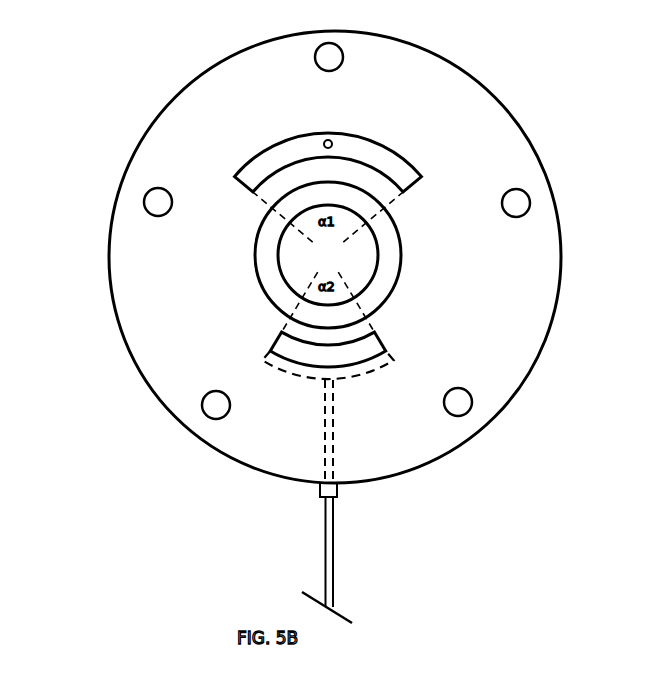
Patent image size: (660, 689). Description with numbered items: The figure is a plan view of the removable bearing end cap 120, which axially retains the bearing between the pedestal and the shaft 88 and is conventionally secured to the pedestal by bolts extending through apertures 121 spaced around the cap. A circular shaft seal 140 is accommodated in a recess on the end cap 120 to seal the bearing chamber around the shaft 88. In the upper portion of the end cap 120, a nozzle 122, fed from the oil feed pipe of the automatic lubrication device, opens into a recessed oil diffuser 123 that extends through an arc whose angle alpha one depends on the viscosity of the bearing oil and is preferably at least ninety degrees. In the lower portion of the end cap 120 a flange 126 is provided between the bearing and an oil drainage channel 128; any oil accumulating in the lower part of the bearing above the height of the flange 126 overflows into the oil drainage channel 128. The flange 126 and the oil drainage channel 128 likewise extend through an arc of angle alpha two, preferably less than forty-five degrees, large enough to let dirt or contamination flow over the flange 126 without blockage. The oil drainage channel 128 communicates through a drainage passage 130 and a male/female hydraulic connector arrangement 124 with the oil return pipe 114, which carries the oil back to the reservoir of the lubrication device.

The bearing end cap 120 is at (518, 118).
The apertures 121 is at (519, 202).
The nozzle 122 is at (323, 144).
The recessed oil diffuser 123 is at (252, 174).
The circular shaft seal 140 is at (401, 246).
The shaft 88 is at (328, 255).
The flange 126 is at (266, 355).
The oil drainage channel 128 is at (339, 380).
The drainage passage 130 is at (325, 422).
The male/female hydraulic connector arrangement 124 is at (337, 492).
The oil return pipe 114 is at (325, 592).